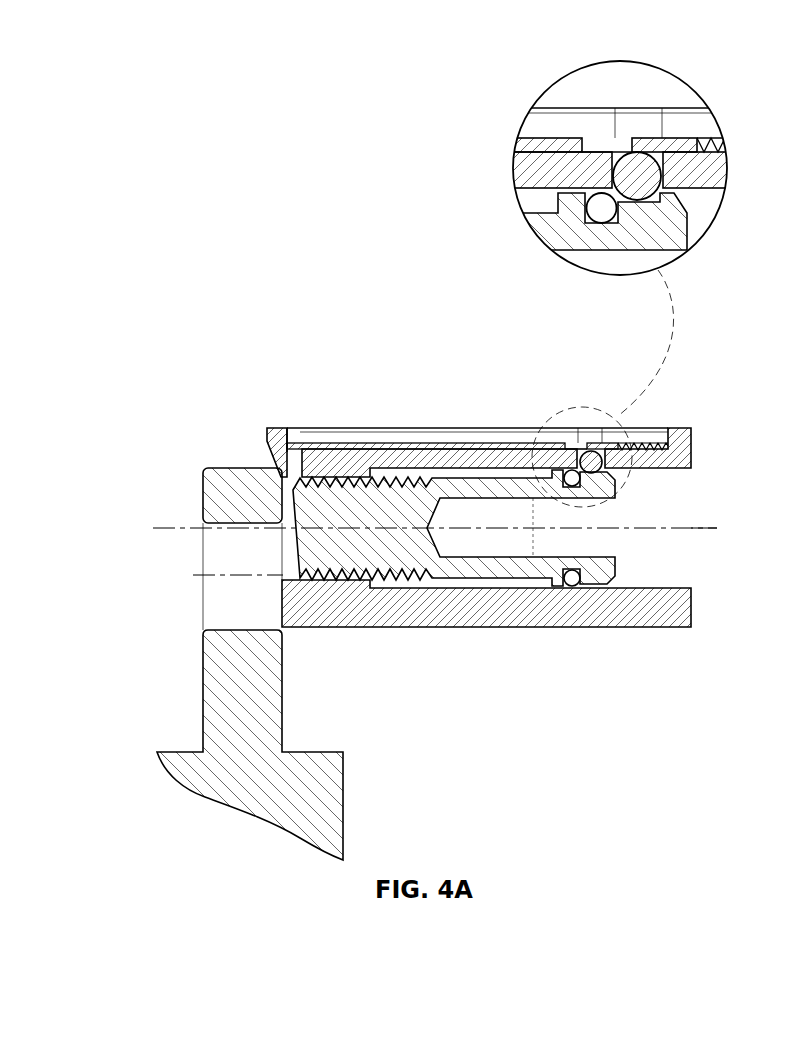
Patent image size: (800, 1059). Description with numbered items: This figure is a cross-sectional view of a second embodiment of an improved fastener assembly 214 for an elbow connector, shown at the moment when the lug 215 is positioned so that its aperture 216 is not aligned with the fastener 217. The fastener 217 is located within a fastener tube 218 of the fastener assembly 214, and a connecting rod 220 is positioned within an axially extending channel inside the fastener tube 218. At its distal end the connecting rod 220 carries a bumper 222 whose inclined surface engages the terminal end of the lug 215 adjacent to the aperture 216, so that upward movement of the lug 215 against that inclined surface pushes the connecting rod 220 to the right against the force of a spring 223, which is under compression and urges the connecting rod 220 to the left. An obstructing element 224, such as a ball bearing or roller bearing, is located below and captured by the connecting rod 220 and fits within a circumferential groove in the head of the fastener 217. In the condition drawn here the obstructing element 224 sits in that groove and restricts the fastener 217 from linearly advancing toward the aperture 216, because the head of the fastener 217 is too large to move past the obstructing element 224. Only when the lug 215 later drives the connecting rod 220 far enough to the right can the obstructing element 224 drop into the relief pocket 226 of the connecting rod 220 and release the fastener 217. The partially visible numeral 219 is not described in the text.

The fastener assembly 214 is at (553, 391).
The lug 215 is at (202, 758).
The aperture 216 is at (212, 543).
The fastener 217 is at (413, 562).
The fastener tube 218 is at (637, 612).
The outlet 219 is at (745, 543).
The connecting rod 220 is at (360, 450).
The bumper 222 is at (273, 428).
The spring 223 is at (655, 442).
The obstructing element 224 is at (585, 455).
The relief pocket 226 is at (612, 143).